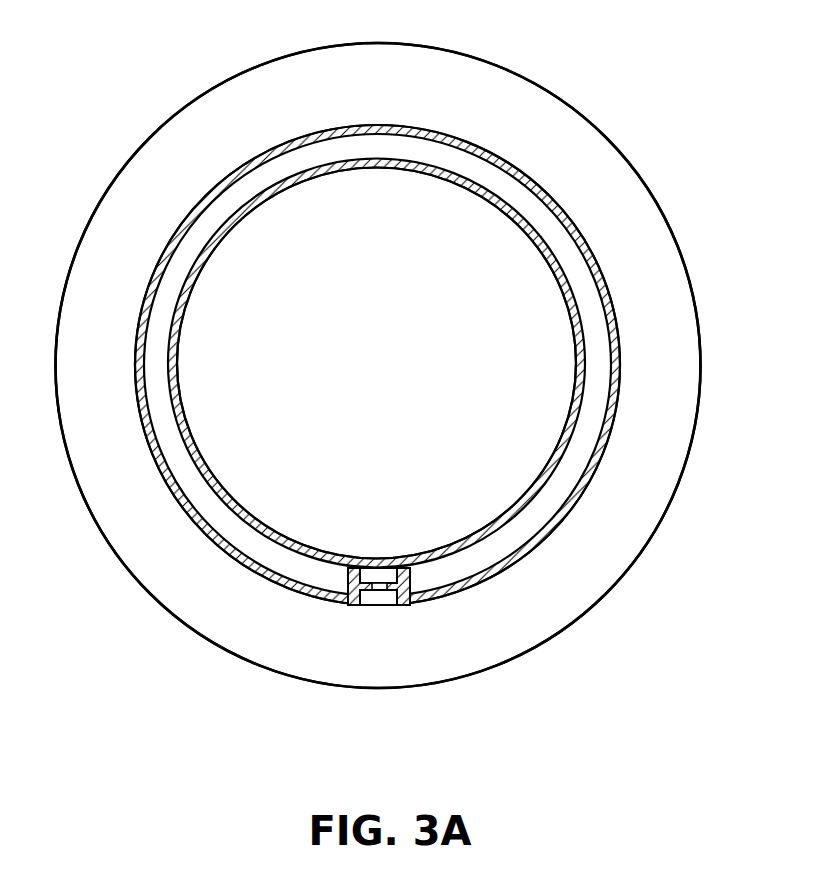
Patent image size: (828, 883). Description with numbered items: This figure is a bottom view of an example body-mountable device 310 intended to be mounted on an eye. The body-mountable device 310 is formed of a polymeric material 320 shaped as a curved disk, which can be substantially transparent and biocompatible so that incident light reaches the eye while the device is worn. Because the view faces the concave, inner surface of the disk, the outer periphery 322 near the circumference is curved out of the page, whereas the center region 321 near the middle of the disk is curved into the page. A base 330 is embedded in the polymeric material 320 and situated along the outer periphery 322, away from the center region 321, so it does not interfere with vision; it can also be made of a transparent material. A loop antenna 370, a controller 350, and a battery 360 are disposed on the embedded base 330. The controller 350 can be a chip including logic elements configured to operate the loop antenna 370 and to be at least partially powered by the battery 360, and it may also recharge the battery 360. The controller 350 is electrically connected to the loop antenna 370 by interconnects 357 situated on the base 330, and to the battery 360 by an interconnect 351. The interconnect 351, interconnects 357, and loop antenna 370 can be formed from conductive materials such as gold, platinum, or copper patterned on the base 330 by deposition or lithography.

The body-mountable device 310 is at (137, 67).
The polymeric material 320 is at (100, 535).
The center region 321 is at (333, 325).
The outer periphery 322 is at (317, 80).
The base 330 is at (570, 518).
The loop antenna 370 is at (503, 553).
The controller 350 is at (372, 600).
The interconnect 351 is at (393, 587).
The interconnects 357 is at (407, 607).
The battery 360 is at (377, 573).